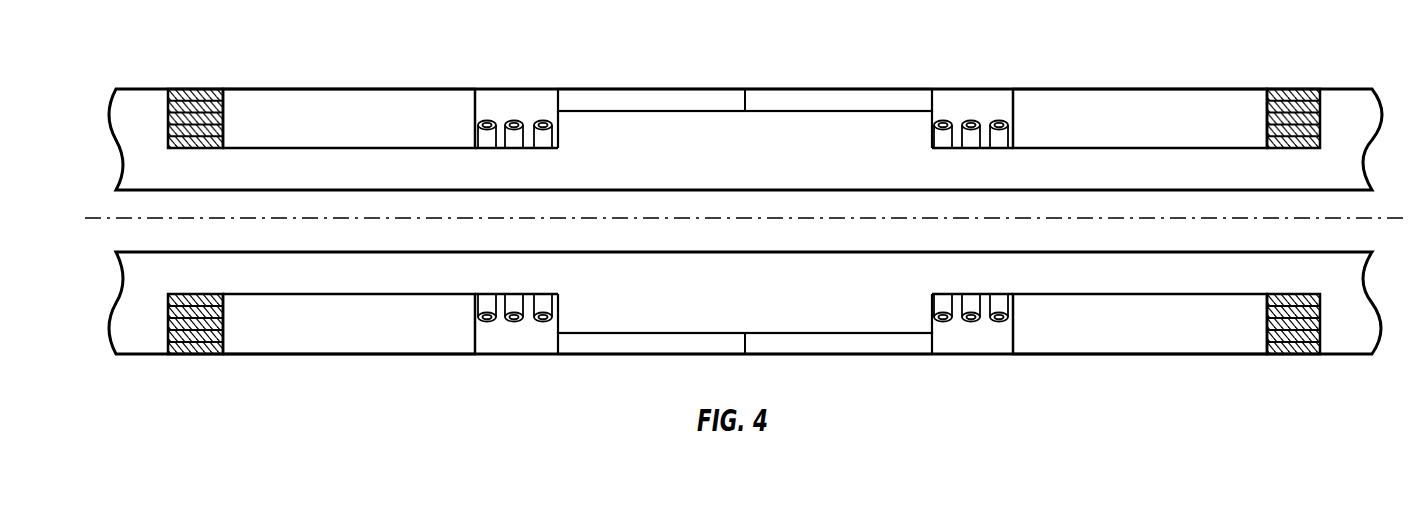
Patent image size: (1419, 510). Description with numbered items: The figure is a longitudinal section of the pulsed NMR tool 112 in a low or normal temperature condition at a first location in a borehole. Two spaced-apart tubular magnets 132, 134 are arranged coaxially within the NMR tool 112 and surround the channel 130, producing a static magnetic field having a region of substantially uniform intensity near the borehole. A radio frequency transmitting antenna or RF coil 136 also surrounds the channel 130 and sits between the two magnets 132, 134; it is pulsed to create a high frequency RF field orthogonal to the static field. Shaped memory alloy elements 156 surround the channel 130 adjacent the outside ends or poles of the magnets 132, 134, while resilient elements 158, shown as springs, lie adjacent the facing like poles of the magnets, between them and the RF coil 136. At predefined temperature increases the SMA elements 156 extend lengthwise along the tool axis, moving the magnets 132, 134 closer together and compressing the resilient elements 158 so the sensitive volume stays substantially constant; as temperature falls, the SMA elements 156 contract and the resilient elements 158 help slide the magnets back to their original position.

The pulsed NMR tool 112 is at (1356, 71).
The channel 130 is at (765, 218).
The first tubular magnet 132 is at (338, 355).
The second tubular magnet 134 is at (1181, 355).
The RF transmitting antenna or coil 136 is at (649, 88).
The shaped memory alloy (SMA) elements 156 is at (196, 87).
The resilient elements 158 is at (517, 323).